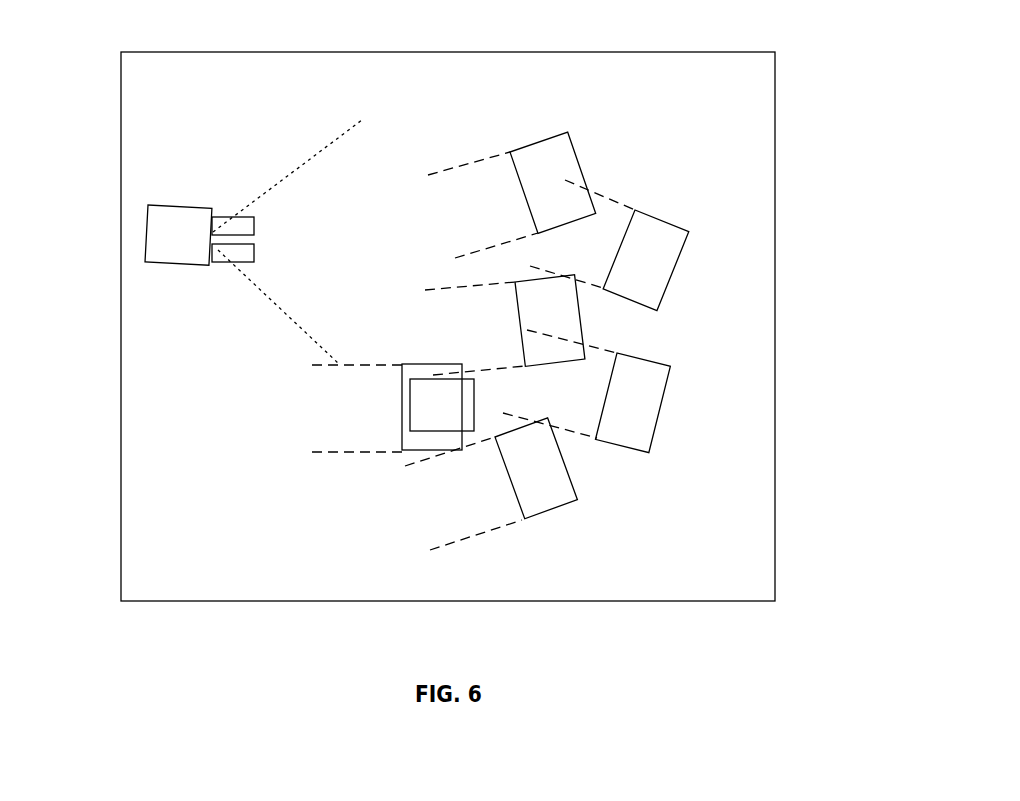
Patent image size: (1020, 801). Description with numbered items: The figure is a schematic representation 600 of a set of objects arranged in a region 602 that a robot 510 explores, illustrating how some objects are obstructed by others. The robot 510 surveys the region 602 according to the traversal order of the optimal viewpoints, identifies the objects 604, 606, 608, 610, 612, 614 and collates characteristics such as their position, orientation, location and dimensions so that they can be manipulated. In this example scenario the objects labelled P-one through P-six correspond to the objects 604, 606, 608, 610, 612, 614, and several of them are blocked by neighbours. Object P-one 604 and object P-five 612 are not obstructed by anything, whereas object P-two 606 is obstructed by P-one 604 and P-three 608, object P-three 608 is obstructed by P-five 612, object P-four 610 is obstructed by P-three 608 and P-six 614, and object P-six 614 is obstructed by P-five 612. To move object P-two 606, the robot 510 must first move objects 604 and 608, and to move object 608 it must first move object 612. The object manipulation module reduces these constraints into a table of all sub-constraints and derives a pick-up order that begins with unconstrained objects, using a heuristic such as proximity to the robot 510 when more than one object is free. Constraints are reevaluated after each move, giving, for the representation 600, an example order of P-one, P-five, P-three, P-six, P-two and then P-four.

The schematic representation 600 is at (237, 628).
The region 602 is at (775, 92).
The robot 510 is at (148, 225).
The object 604 is at (577, 152).
The object 606 is at (670, 275).
The object 608 is at (583, 340).
The object 610 is at (660, 407).
The object 612 is at (460, 404).
The object 614 is at (570, 482).